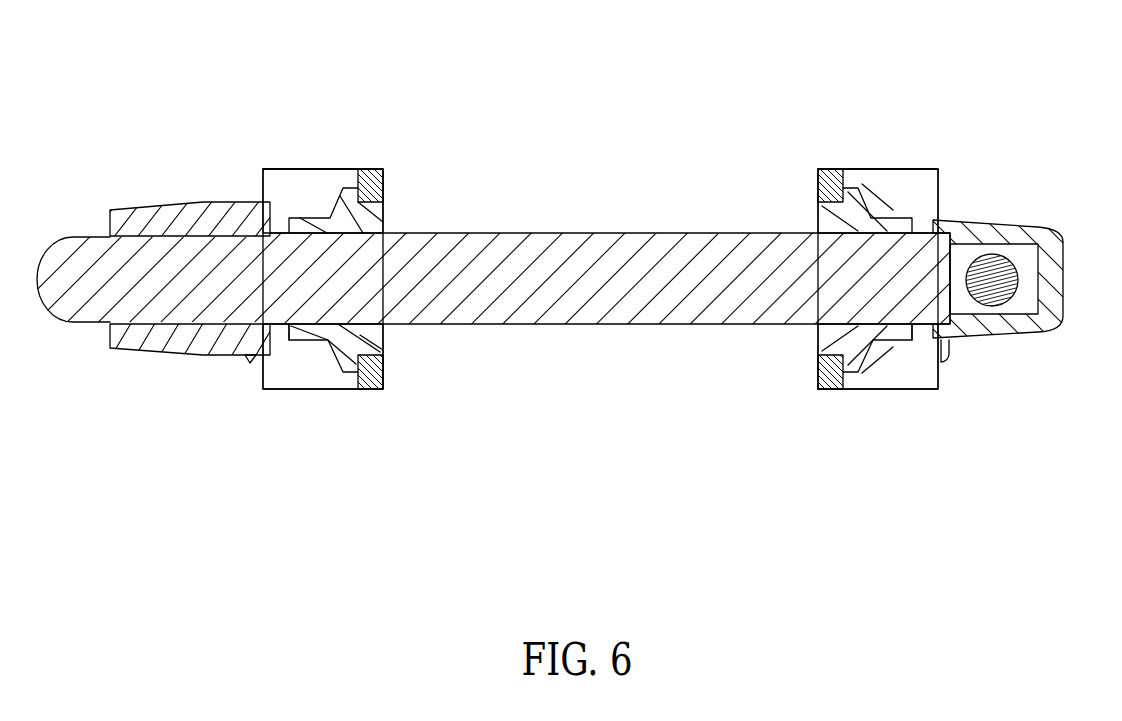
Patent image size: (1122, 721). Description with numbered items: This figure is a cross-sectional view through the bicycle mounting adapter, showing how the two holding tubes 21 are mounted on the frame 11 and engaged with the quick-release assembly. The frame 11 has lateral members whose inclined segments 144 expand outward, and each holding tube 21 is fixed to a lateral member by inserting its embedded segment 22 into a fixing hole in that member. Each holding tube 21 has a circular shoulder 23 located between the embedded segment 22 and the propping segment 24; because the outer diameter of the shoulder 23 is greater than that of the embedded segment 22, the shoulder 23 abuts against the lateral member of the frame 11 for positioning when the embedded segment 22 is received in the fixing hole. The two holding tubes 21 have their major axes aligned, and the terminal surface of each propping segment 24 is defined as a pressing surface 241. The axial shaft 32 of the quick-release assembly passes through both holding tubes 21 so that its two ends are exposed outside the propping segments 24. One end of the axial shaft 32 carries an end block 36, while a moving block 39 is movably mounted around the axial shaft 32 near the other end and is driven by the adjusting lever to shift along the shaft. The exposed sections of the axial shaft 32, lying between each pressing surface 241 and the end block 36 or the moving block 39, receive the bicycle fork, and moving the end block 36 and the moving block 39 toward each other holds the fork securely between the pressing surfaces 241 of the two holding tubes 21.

The frame 11 is at (312, 168).
The holding tube 21 is at (305, 216).
The embedded segment 22 is at (383, 222).
The shoulder 23 is at (356, 188).
The propping segment 24 is at (329, 199).
The pressing surface 241 is at (283, 338).
The inclined segment 144 is at (276, 168).
The axial shaft 32 is at (578, 325).
The end block 36 is at (160, 206).
The moving block 39 is at (1057, 226).